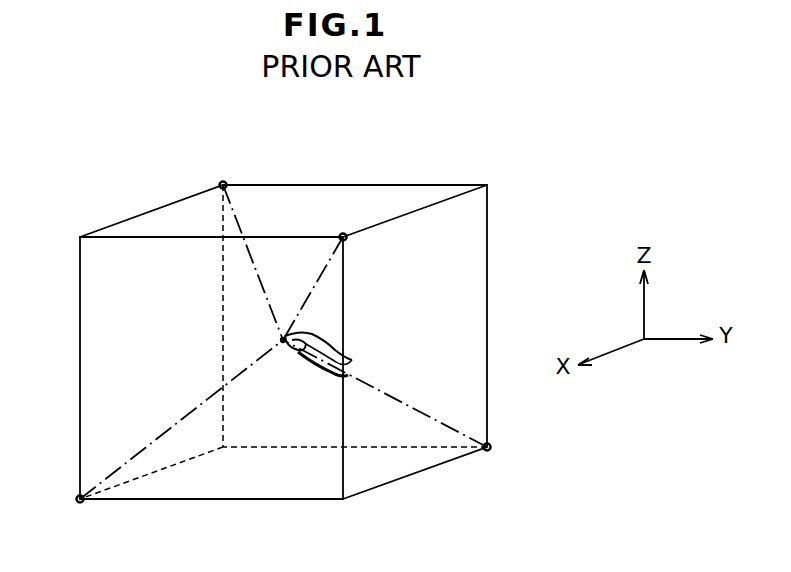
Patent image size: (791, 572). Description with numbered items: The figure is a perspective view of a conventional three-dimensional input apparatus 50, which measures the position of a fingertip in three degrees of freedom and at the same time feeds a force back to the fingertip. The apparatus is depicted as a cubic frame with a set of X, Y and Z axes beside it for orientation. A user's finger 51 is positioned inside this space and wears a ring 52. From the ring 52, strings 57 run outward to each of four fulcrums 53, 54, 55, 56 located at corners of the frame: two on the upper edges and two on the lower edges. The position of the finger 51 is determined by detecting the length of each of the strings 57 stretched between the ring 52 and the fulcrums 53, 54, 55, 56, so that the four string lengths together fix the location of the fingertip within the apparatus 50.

The three-dimensional input apparatus 50 is at (452, 168).
The finger 51 is at (283, 345).
The ring 52 is at (292, 350).
The fulcrum 53 is at (223, 185).
The fulcrum 54 is at (343, 237).
The fulcrum 55 is at (80, 499).
The fulcrum 56 is at (487, 447).
The strings 57 is at (237, 217).